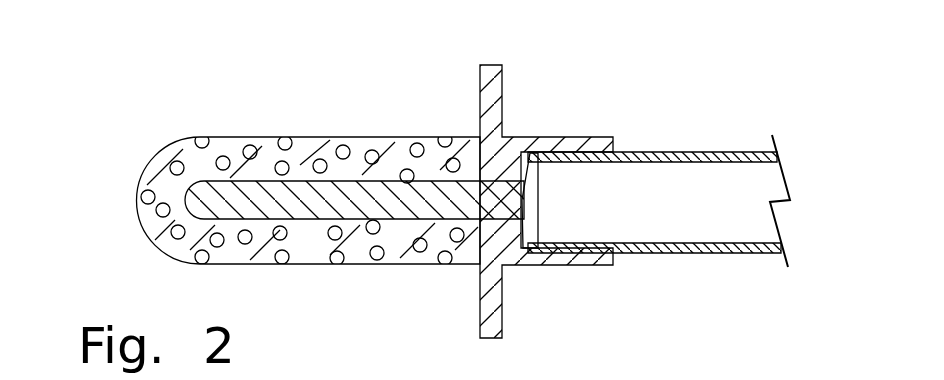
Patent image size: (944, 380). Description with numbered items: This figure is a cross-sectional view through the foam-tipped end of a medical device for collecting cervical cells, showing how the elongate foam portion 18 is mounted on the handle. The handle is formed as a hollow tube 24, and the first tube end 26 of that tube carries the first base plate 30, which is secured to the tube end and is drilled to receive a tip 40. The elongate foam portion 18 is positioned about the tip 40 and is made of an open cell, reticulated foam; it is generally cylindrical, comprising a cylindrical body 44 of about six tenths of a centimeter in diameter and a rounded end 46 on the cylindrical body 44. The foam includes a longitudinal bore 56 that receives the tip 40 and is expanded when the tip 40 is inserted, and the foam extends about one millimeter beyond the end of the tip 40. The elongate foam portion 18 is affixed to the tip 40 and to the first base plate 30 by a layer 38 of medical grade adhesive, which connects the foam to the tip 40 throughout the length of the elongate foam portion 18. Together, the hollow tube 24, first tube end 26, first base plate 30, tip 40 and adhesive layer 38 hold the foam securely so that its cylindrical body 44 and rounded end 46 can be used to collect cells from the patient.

The elongate foam portion 18 is at (390, 137).
The longitudinal bore 56 is at (304, 155).
The rounded end 46 is at (150, 168).
The tip 40 is at (265, 188).
The cylindrical body 44 is at (253, 264).
The layer of medical grade adhesive 38 is at (313, 219).
The first base plate 30 is at (494, 65).
The first tube end 26 is at (530, 185).
The hollow tube 24 is at (638, 255).